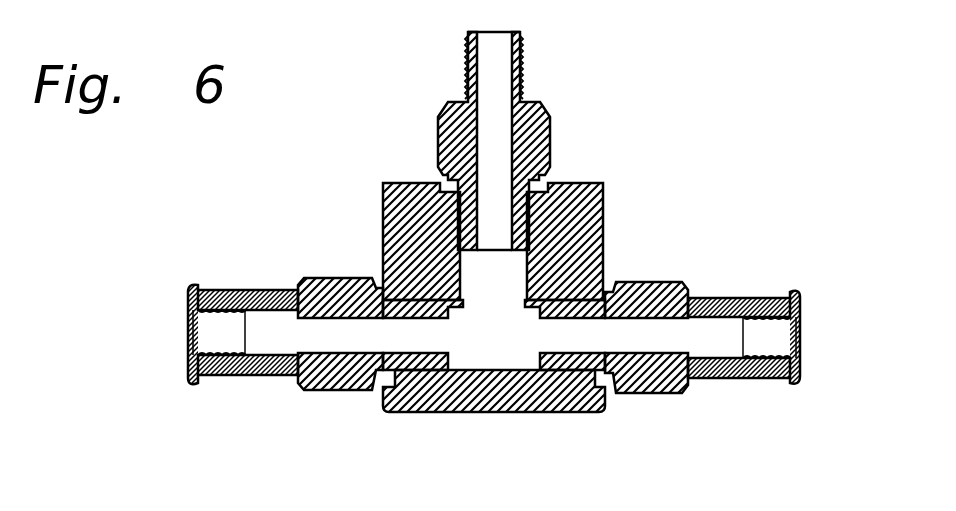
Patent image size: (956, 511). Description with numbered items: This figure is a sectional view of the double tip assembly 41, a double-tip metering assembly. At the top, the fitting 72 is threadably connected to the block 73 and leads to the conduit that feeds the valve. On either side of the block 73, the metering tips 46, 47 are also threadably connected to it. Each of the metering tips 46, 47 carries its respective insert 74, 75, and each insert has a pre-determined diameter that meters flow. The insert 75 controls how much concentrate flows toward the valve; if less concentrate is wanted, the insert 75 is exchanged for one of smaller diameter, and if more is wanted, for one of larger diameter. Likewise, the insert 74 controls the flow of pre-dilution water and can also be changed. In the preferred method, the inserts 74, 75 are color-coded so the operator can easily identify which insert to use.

The double tip assembly 41 is at (727, 160).
The fitting 72 is at (551, 146).
The block 73 is at (604, 242).
The insert 74 is at (715, 327).
The insert 75 is at (268, 322).
The metering tip 46 is at (675, 394).
The metering tip 47 is at (323, 389).